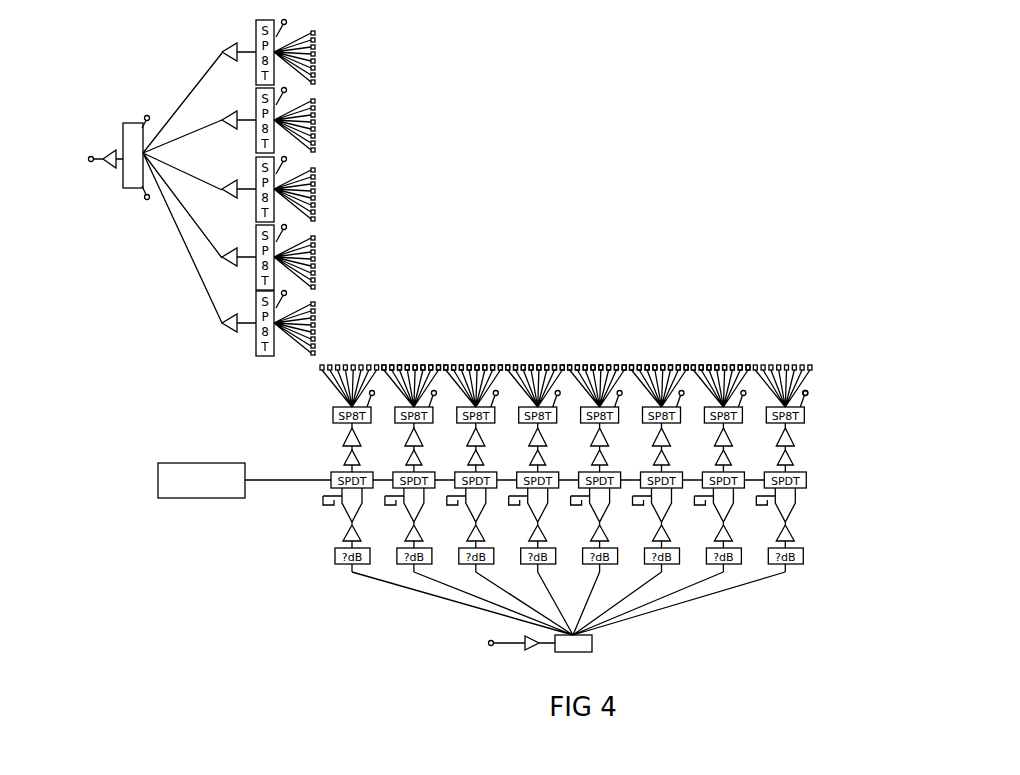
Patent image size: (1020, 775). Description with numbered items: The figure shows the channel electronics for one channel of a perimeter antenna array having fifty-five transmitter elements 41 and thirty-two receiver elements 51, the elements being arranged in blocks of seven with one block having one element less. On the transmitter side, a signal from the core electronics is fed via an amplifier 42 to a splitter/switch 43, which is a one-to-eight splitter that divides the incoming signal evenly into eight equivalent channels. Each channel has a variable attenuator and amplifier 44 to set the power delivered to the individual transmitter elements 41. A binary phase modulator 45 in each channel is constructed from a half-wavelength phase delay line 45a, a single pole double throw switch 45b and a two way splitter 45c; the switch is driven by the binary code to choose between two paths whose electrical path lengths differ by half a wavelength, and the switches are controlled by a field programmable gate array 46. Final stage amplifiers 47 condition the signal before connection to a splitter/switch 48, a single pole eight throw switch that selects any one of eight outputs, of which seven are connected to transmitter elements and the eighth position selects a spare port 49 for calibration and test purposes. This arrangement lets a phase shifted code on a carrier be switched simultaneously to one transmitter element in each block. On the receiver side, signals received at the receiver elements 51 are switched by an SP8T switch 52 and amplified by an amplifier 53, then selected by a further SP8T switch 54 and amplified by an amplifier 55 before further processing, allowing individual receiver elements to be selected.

The transmitter element 41 is at (446, 366).
The amplifier 42 is at (512, 647).
The splitter/switch 43 is at (592, 644).
The variable attenuator and amplifier 44 is at (836, 551).
The binary phase modulator 45 is at (836, 480).
The phase delay line 45a is at (273, 537).
The single pole double throw switch 45b is at (302, 462).
The two way splitter 45c is at (317, 540).
The field programmable gate array 46 is at (200, 498).
The final stage amplifier 47 is at (277, 426).
The splitter/switch 48 is at (814, 399).
The spare port 49 is at (832, 344).
The receiver element 51 is at (315, 237).
The SP8T switch 52 is at (256, 30).
The amplifier 53 is at (228, 333).
The SP8T switch 54 is at (131, 190).
The amplifier 55 is at (110, 150).